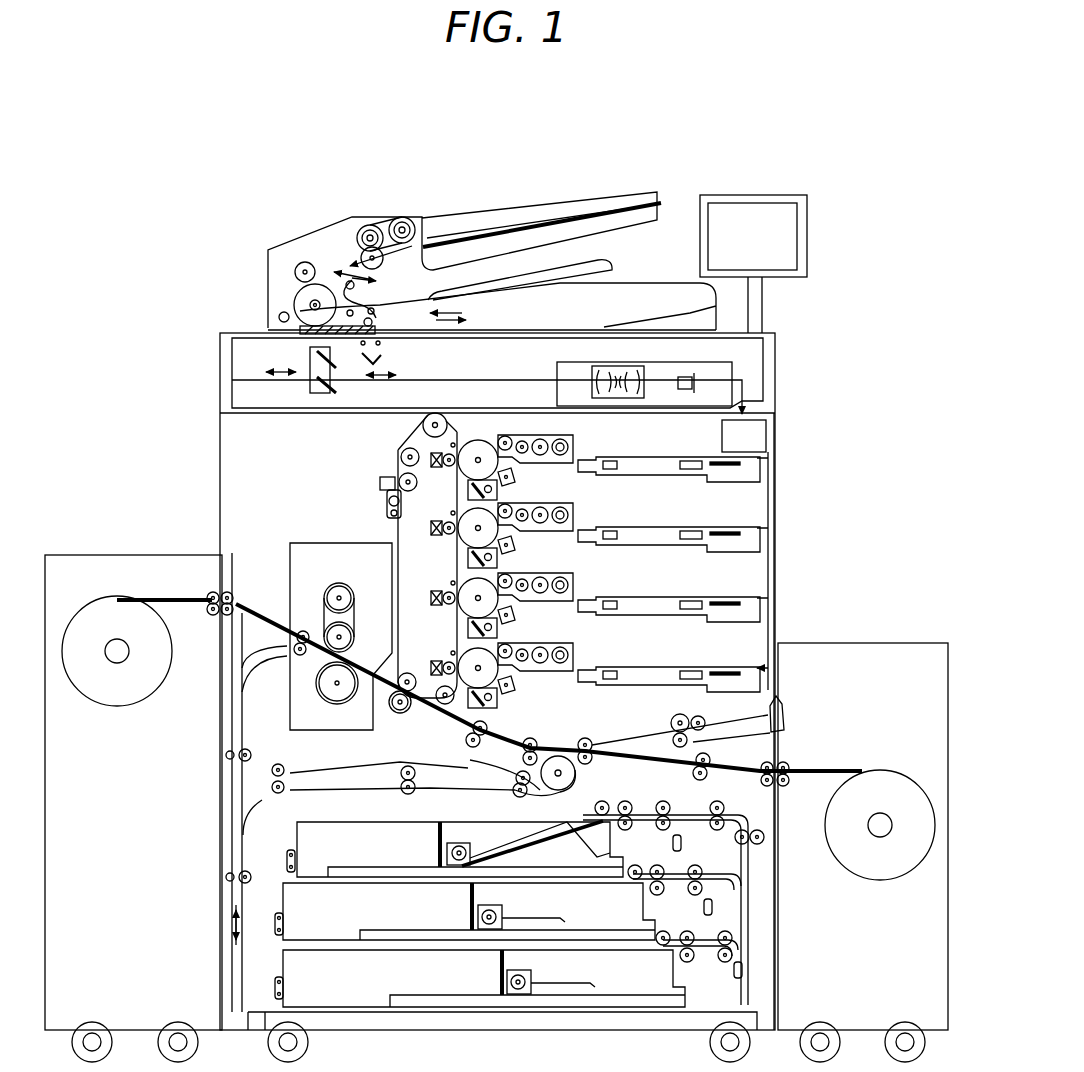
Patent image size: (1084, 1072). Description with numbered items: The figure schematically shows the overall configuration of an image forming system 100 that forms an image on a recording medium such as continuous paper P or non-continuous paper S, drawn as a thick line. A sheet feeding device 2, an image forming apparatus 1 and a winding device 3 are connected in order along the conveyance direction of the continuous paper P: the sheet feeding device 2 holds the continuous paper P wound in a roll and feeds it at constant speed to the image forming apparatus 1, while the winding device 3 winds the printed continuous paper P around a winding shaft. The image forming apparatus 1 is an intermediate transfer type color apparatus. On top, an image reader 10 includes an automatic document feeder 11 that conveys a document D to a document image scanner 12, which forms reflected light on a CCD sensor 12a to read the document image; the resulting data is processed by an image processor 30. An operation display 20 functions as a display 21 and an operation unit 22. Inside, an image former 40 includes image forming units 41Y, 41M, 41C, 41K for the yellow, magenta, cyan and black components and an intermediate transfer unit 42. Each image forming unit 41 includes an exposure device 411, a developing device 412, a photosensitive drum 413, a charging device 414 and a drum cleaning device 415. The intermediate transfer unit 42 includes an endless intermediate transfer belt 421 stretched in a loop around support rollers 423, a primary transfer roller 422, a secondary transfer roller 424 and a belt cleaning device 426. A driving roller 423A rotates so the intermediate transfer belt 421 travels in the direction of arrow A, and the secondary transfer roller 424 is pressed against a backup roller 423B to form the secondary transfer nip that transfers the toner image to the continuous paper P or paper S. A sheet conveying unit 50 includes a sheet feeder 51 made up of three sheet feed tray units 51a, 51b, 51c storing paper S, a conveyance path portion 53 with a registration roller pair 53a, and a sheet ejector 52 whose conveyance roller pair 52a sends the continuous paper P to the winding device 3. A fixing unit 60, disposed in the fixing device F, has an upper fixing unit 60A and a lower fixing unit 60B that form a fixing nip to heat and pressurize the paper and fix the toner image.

The image forming system 100 is at (246, 121).
The image forming apparatus 1 is at (475, 198).
The sheet feeding device 2 is at (847, 641).
The winding device 3 is at (118, 553).
The image reader 10 is at (190, 262).
The automatic document feeder 11 is at (268, 276).
The document image scanner 12 is at (250, 332).
The CCD sensor 12a is at (698, 377).
The operation display 20 is at (819, 264).
The display 21 is at (819, 264).
The operation unit 22 is at (808, 238).
The image processor 30 is at (786, 415).
The image former 40 is at (340, 487).
The image forming unit 41 is at (581, 531).
The image forming unit for Y component 41Y is at (597, 491).
The image forming unit for M component 41M is at (597, 559).
The image forming unit for C component 41C is at (597, 629).
The image forming unit for K component 41K is at (588, 695).
The exposure device 411 is at (638, 453).
The developing device 412 is at (578, 437).
The photosensitive drum 413 is at (477, 439).
The charging device 414 is at (515, 481).
The drum cleaning device 415 is at (468, 498).
The intermediate transfer unit 42 is at (346, 446).
The intermediate transfer belt 421 is at (395, 530).
The primary transfer roller 422 is at (413, 487).
The support rollers 423 is at (425, 420).
The driving roller 423A is at (473, 745).
The backup roller 423B is at (414, 712).
The secondary transfer roller 424 is at (394, 720).
The belt cleaning device 426 is at (378, 482).
The sheet conveying unit 50 is at (764, 822).
The sheet feeder 51 is at (400, 816).
The sheet feed tray unit 51a is at (302, 842).
The sheet feed tray unit 51b is at (290, 903).
The sheet feed tray unit 51c is at (302, 980).
The sheet ejector 52 is at (232, 585).
The conveyance roller pair 52a is at (234, 598).
The conveyance path portion 53 is at (556, 740).
The registration roller pair 53a is at (502, 722).
The fixing unit 60 is at (318, 540).
The upper fixing unit 60A is at (330, 590).
The lower fixing unit 60B is at (309, 706).
The belt traveling direction arrow A is at (402, 545).
The document D is at (546, 212).
The fixing device F is at (298, 542).
The continuous paper P is at (818, 766).
The paper S is at (527, 837).